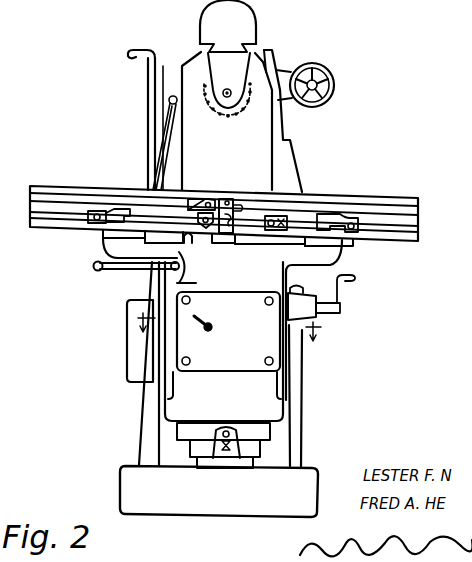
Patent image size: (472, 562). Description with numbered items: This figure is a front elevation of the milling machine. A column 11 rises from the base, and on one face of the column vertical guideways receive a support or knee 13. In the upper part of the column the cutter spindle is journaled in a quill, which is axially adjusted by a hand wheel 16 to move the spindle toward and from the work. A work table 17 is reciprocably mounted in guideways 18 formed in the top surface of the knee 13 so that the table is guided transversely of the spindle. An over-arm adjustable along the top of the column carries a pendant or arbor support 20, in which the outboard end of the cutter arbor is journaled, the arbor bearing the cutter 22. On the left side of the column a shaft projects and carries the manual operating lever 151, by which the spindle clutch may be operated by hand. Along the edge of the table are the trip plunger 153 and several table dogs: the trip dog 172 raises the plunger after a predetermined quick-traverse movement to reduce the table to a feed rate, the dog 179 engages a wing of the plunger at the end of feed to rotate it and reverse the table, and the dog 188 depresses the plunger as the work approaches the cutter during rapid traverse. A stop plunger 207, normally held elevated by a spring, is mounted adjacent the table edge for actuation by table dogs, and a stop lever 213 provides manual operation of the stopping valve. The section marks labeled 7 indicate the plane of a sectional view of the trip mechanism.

The column 11 is at (190, 63).
The knee 13 is at (341, 247).
The hand wheel 16 is at (331, 69).
The work table 17 is at (405, 200).
The guideways 18 is at (254, 16).
The arbor support 20 is at (271, 58).
The cutter 22 is at (222, 110).
The manual operating lever 151 is at (148, 81).
The trip plunger 153 is at (226, 200).
The trip dog 172 is at (284, 215).
The dog 179 is at (348, 218).
The dog 188 is at (190, 198).
The stop plunger 207 is at (197, 243).
The stop lever 213 is at (197, 313).
The section line 7 is at (229, 335).